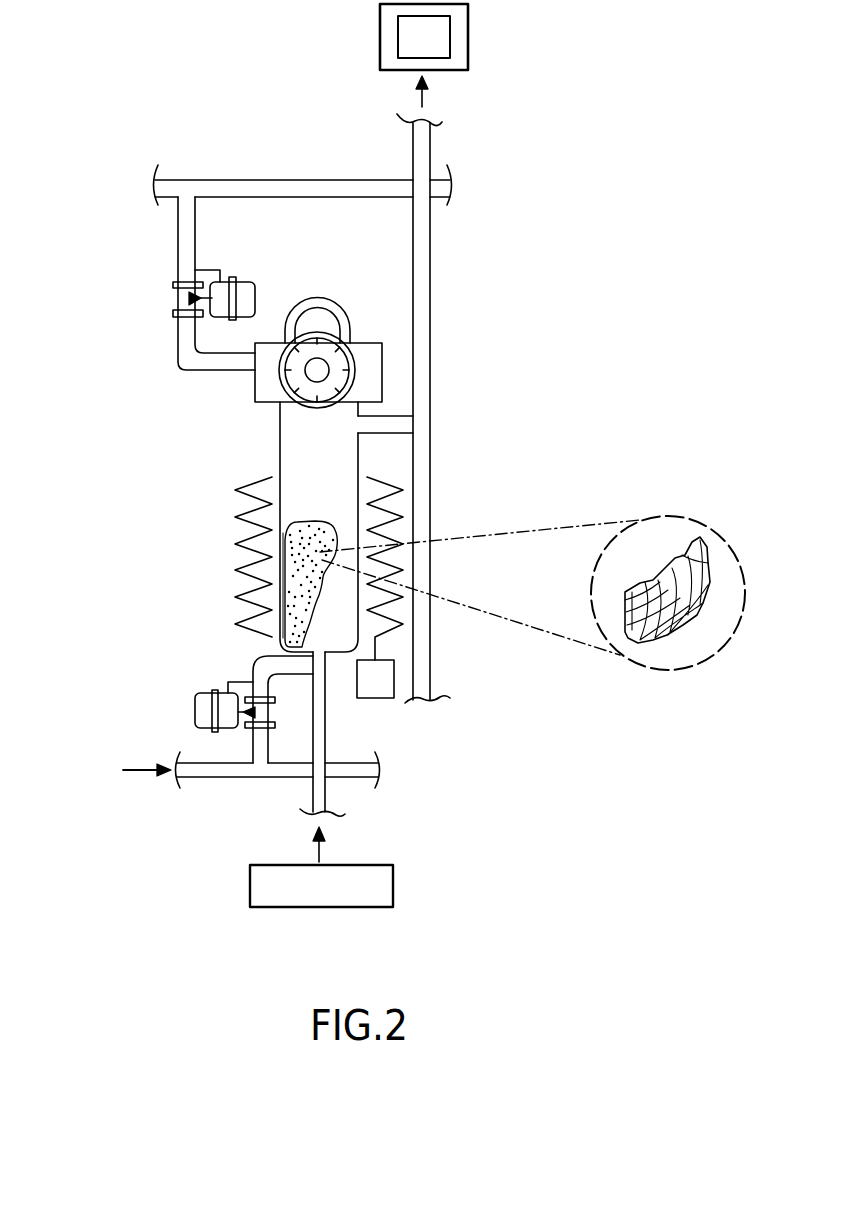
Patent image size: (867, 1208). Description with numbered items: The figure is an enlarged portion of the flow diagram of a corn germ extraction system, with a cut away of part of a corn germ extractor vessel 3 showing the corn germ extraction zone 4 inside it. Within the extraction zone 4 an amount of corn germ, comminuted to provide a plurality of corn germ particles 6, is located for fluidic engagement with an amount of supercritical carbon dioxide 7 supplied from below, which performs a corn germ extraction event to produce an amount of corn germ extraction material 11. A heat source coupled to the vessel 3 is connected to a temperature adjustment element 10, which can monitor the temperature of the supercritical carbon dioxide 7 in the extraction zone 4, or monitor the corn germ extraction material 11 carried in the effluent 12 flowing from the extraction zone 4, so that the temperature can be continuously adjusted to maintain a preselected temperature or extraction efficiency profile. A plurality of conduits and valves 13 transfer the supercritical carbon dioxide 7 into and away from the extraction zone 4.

The corn germ extractor vessel 3 is at (325, 457).
The corn germ extraction zone 4 is at (291, 557).
The corn germ particles 6 is at (710, 597).
The supercritical carbon dioxide 7 is at (313, 899).
The temperature adjustment element 10 is at (385, 692).
The corn germ extraction material 11 is at (414, 48).
The effluent 12 is at (468, 40).
The conduits and valves 13 is at (200, 294).